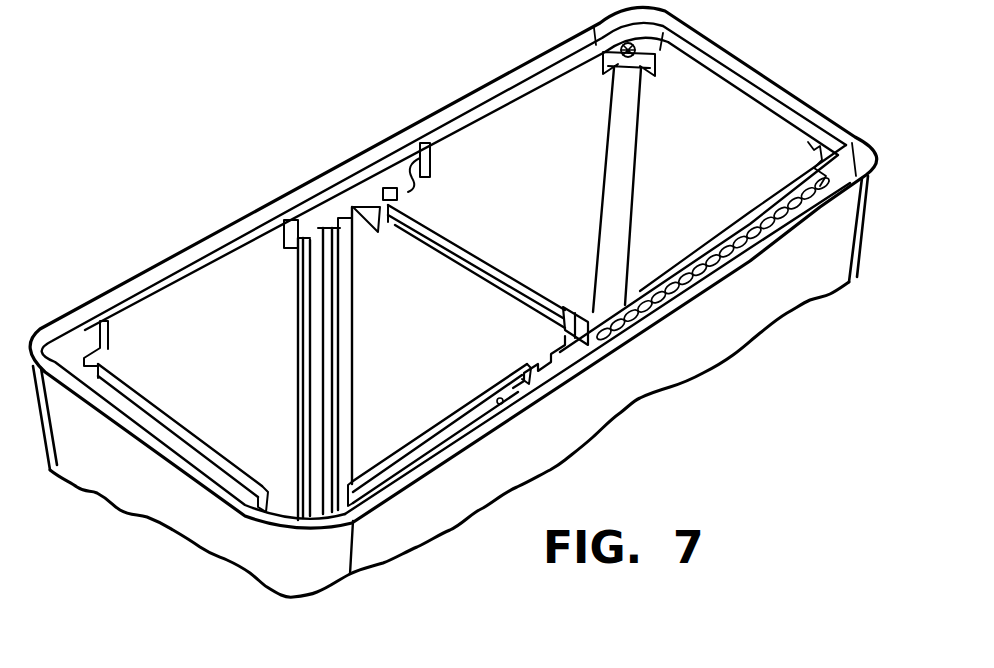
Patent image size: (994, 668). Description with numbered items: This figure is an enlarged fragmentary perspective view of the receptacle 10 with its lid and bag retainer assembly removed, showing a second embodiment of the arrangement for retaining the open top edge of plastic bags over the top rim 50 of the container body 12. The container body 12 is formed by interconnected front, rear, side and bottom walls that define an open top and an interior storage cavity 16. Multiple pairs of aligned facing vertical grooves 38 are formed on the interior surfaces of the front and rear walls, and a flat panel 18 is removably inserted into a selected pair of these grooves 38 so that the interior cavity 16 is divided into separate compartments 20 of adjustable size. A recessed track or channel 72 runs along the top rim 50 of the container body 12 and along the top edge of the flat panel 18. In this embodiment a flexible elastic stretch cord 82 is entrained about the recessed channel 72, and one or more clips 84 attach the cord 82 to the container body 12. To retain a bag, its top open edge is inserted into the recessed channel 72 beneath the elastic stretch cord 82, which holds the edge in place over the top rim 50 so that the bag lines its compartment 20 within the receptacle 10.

The receptacle 10 is at (766, 62).
The container body 12 is at (794, 334).
The interior storage cavity 16 is at (552, 98).
The flat panel 18 is at (424, 341).
The separate compartment 20 is at (495, 134).
The vertical grooves 38 is at (310, 322).
The top rim 50 is at (418, 476).
The recessed track or channel 72 is at (455, 118).
The flexible elastic stretch cord 82 is at (423, 180).
The clip 84 is at (645, 70).